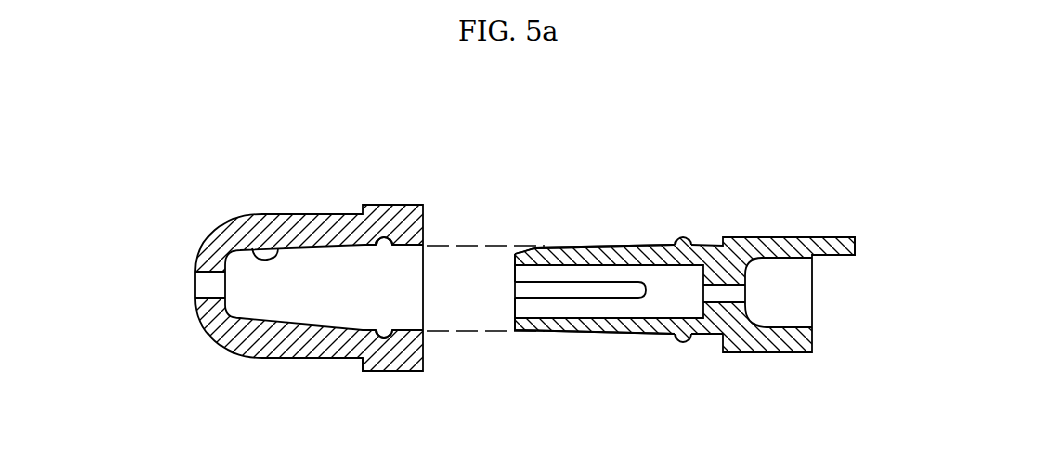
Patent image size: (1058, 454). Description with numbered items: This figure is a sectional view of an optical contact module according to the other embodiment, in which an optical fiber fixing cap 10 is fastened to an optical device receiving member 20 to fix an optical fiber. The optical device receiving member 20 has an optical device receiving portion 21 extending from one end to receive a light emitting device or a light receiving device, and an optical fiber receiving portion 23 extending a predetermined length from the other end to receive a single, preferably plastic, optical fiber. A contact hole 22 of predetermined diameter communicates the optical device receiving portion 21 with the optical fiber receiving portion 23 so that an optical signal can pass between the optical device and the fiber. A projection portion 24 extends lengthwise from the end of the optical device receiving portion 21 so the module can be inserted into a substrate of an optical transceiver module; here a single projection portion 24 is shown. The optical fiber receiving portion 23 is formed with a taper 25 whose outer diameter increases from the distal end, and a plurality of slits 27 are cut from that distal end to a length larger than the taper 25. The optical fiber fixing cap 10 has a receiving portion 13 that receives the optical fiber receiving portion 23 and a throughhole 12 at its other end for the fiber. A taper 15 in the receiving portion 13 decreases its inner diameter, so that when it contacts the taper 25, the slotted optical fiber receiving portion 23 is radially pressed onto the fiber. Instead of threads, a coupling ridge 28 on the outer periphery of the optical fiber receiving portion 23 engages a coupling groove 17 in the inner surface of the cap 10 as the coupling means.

The optical fiber fixing cap 10 is at (220, 208).
The throughhole 12 is at (197, 298).
The receiving portion 13 is at (321, 319).
The taper 15 is at (284, 252).
The coupling groove 17 is at (381, 241).
The optical device receiving member 20 is at (748, 210).
The optical device receiving portion 21 is at (787, 258).
The contact hole 22 is at (737, 299).
The optical fiber receiving portion 23 is at (629, 312).
The projection portion 24 is at (852, 238).
The taper 25 is at (550, 250).
The slits 27 is at (586, 297).
The coupling ridge 28 is at (683, 240).